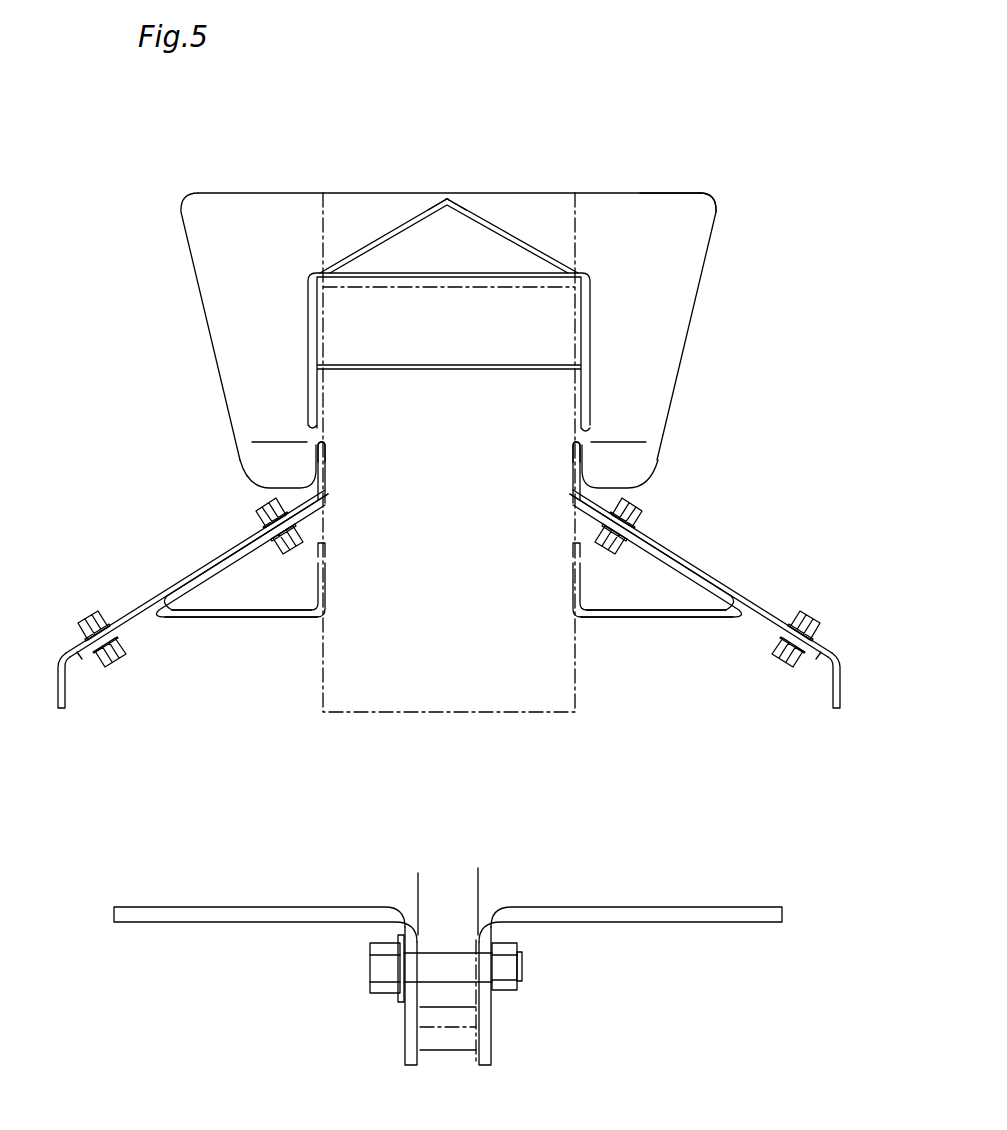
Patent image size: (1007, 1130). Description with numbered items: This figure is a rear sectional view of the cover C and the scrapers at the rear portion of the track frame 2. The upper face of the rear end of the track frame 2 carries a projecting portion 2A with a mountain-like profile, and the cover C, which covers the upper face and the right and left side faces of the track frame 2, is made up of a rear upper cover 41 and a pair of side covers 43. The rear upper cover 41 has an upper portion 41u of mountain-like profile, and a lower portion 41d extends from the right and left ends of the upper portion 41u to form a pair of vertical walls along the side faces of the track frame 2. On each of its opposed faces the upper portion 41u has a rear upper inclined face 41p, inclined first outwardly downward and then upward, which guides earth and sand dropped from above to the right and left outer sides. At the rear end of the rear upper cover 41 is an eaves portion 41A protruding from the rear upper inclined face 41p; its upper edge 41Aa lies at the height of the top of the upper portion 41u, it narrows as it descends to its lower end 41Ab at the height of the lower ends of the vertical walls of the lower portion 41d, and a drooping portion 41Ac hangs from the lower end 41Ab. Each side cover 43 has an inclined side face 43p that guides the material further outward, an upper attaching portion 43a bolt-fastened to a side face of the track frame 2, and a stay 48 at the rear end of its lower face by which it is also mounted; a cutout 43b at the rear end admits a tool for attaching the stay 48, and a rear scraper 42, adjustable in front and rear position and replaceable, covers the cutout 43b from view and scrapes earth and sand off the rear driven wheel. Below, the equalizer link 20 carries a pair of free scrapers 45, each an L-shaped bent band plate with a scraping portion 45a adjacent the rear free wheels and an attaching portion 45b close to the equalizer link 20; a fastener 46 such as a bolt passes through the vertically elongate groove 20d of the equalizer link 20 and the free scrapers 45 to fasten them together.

The track frame 2 is at (322, 665).
The projecting portion 2A is at (574, 230).
The rear upper cover 41 is at (372, 179).
The eaves portion 41A is at (654, 208).
The upper edge 41Aa is at (685, 193).
The lower end 41Ab is at (620, 442).
The drooping portion 41Ac is at (638, 463).
The lower portion 41d is at (292, 364).
The upper portion 41u is at (346, 237).
The rear upper inclined face 41p is at (498, 220).
The cover C is at (738, 337).
The rear scraper 42 is at (210, 560).
The side cover 43 is at (118, 606).
The upper attaching portion 43a is at (330, 466).
The cutout 43b is at (245, 547).
The inclined side face 43p is at (137, 610).
The stay 48 is at (197, 613).
The equalizer link 20 is at (417, 890).
The elongate groove 20d is at (452, 952).
The free scraper 45 is at (448, 966).
The scraping portion 45a is at (218, 918).
The attaching portion 45b is at (483, 1013).
The fastener 46 is at (372, 965).